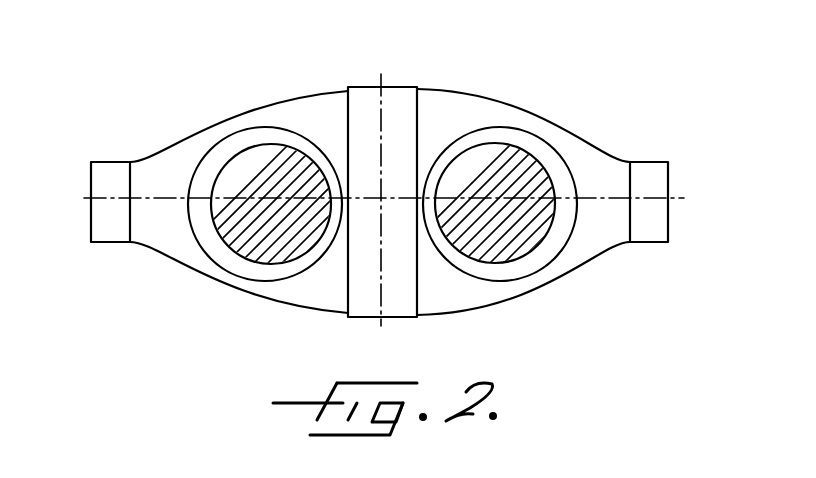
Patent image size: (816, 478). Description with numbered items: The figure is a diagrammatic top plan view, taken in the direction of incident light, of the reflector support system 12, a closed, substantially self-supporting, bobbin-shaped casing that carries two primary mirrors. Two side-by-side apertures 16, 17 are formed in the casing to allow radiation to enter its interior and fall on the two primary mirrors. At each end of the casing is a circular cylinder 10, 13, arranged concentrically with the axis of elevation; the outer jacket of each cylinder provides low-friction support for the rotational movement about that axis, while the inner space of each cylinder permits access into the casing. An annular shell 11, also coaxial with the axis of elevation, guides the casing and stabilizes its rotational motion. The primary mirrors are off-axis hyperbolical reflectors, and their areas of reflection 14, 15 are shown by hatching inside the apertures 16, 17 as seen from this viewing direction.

The circular cylinder 10 is at (112, 161).
The annular shell 11 is at (390, 87).
The reflector support system 12 is at (545, 123).
The circular cylinder 13 is at (650, 162).
The area of reflection 14 is at (287, 265).
The area of reflection 15 is at (515, 261).
The aperture 16 is at (232, 275).
The aperture 17 is at (550, 263).